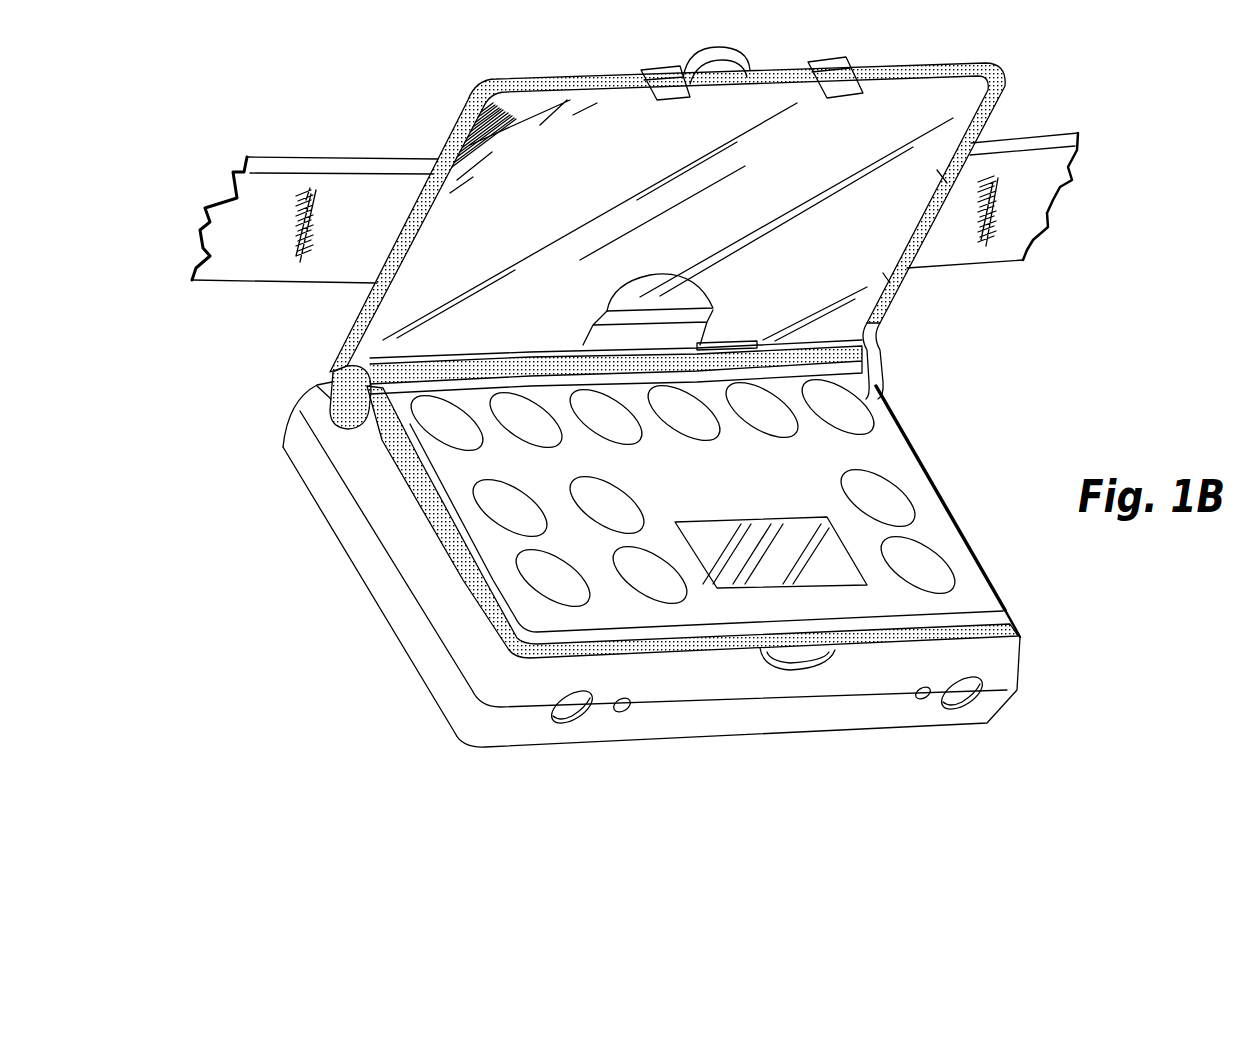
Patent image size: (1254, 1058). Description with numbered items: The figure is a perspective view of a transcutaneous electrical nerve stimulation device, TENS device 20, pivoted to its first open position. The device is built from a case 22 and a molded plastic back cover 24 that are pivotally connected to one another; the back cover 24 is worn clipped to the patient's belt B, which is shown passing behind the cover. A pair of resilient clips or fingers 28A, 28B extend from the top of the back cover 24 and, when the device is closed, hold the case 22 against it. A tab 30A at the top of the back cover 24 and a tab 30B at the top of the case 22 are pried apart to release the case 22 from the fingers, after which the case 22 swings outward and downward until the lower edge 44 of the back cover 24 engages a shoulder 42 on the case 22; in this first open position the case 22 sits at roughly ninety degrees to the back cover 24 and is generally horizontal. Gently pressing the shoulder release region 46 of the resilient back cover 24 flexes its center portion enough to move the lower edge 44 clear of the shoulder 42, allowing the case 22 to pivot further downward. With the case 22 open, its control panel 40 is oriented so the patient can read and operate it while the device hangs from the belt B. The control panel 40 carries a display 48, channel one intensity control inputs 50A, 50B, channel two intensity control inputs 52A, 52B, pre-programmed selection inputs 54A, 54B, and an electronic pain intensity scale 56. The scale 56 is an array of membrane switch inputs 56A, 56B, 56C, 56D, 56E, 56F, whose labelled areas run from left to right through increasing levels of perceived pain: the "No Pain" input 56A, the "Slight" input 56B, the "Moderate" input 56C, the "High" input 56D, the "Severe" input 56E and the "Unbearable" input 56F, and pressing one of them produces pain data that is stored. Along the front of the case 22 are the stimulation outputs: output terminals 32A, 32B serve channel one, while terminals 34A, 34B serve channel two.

The TENS device 20 is at (876, 786).
The case 22 is at (655, 745).
The back cover 24 is at (350, 300).
The resilient clip or finger 28A is at (660, 70).
The resilient clip or finger 28B is at (832, 62).
The tab 30A is at (722, 48).
The tab 30B is at (793, 662).
The output terminal 32A is at (962, 702).
The output terminal 32B is at (925, 703).
The output terminal 34A is at (557, 720).
The output terminal 34B is at (612, 712).
The control panel 40 is at (1000, 607).
The shoulder 42 is at (545, 357).
The lower edge 44 is at (850, 343).
The shoulder release region 46 is at (670, 275).
The display 48 is at (758, 572).
The channel 1 intensity control input 50A is at (928, 562).
The channel 1 intensity control input 50B is at (892, 487).
The channel 2 intensity control input 52A is at (546, 578).
The channel 2 intensity control input 52B is at (500, 510).
The pre-programmed selection input 54A is at (652, 583).
The pre-programmed selection input 54B is at (600, 514).
The electronic pain intensity scale 56 is at (878, 410).
The "No Pain" input 56A is at (837, 404).
The "Slight" input 56B is at (762, 408).
The "Moderate" input 56C is at (665, 400).
The "High" input 56D is at (600, 412).
The "Severe" input 56E is at (528, 417).
The "Unbearable" input 56F is at (443, 420).
The belt B is at (364, 165).